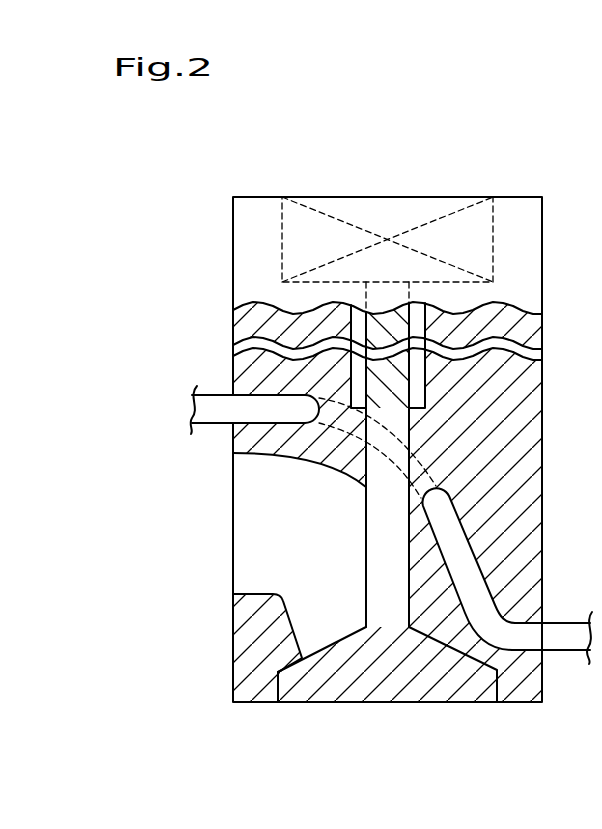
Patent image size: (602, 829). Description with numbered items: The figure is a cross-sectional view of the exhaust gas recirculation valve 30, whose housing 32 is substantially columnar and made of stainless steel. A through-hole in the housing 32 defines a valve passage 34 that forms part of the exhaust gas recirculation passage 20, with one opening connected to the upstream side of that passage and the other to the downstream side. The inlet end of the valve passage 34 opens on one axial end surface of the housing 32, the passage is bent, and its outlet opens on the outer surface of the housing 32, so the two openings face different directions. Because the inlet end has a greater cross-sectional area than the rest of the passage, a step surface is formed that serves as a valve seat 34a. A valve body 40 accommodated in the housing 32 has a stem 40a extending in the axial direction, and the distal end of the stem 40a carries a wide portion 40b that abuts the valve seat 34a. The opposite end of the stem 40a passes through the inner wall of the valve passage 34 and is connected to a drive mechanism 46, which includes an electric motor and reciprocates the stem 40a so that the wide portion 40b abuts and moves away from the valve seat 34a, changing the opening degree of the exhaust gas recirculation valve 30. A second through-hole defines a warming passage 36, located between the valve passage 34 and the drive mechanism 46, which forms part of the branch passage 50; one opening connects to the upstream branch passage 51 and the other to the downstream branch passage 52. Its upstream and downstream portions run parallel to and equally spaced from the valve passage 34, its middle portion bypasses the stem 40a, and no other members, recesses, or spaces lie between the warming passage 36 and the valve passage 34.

The exhaust gas recirculation valve 30 is at (226, 182).
The housing 32 is at (540, 249).
The drive mechanism 46 is at (493, 235).
The downstream branch passage 52 is at (213, 393).
The branch passage 50 is at (391, 543).
The warming passage 36 is at (233, 468).
The valve body 40 is at (370, 555).
The stem 40a is at (365, 515).
The wide portion 40b is at (332, 628).
The valve passage 34 is at (252, 592).
The exhaust gas recirculation passage 20 is at (241, 646).
The valve seat 34a is at (286, 678).
The upstream branch passage 51 is at (565, 652).